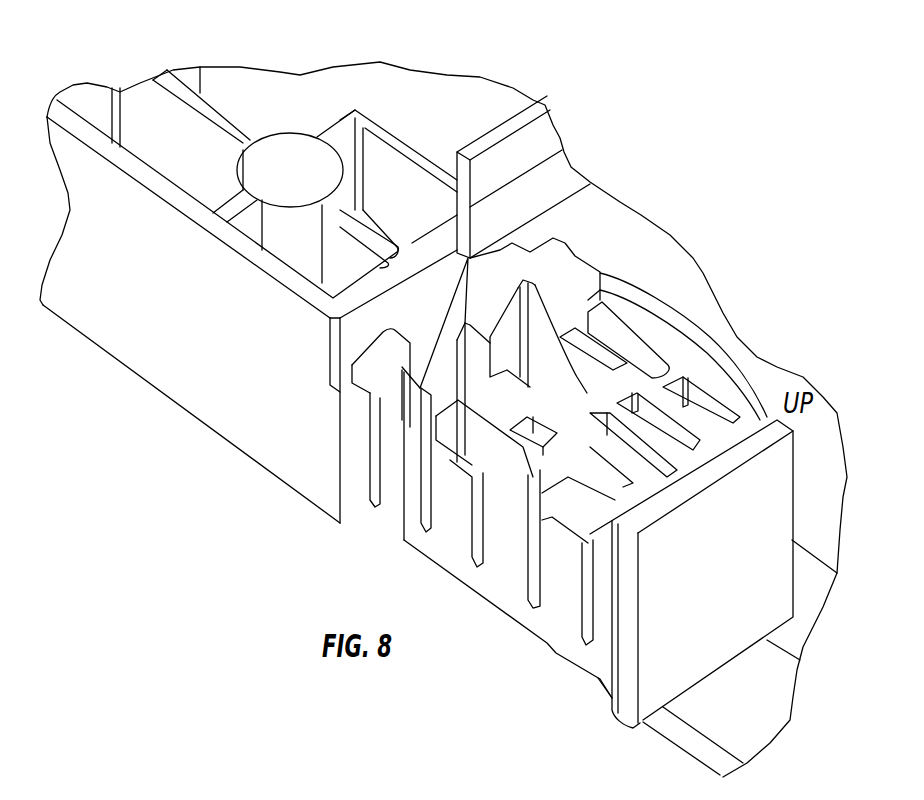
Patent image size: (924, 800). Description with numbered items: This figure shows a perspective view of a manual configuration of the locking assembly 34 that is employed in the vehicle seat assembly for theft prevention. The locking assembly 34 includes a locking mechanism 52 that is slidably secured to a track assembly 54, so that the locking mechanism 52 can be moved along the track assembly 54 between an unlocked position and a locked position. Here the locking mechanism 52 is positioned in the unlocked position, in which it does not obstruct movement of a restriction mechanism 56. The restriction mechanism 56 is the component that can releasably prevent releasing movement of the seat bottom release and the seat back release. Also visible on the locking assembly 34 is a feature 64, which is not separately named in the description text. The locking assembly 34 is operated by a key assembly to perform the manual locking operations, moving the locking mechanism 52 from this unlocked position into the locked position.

The locking assembly 34 is at (575, 101).
The locking mechanism 52 is at (657, 334).
The track assembly 54 is at (262, 500).
The restriction mechanism 56 is at (544, 139).
The diagonal brace 64 is at (490, 281).